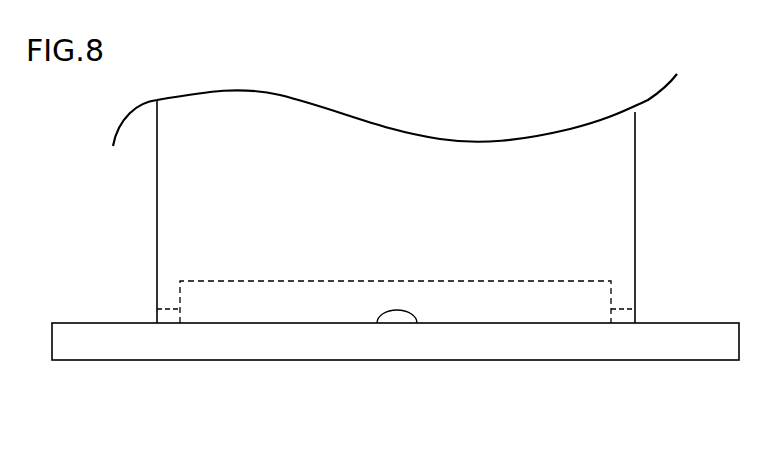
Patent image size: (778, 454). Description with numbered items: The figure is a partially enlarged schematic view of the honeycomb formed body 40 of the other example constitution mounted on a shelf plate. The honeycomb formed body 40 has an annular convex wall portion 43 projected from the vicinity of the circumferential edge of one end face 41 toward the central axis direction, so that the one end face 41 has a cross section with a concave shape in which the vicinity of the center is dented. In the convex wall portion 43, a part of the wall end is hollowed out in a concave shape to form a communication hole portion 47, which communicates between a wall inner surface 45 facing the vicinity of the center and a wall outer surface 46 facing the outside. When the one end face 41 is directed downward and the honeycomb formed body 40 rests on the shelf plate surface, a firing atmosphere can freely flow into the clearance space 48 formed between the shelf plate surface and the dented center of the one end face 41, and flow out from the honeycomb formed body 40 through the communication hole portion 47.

The honeycomb formed body 40 is at (651, 207).
The one end face 41 is at (472, 281).
The convex wall portion 43 is at (155, 315).
The wall inner surface 45 is at (183, 293).
The wall outer surface 46 is at (157, 300).
The communication hole portion 47 is at (168, 313).
The clearance space 48 is at (288, 315).